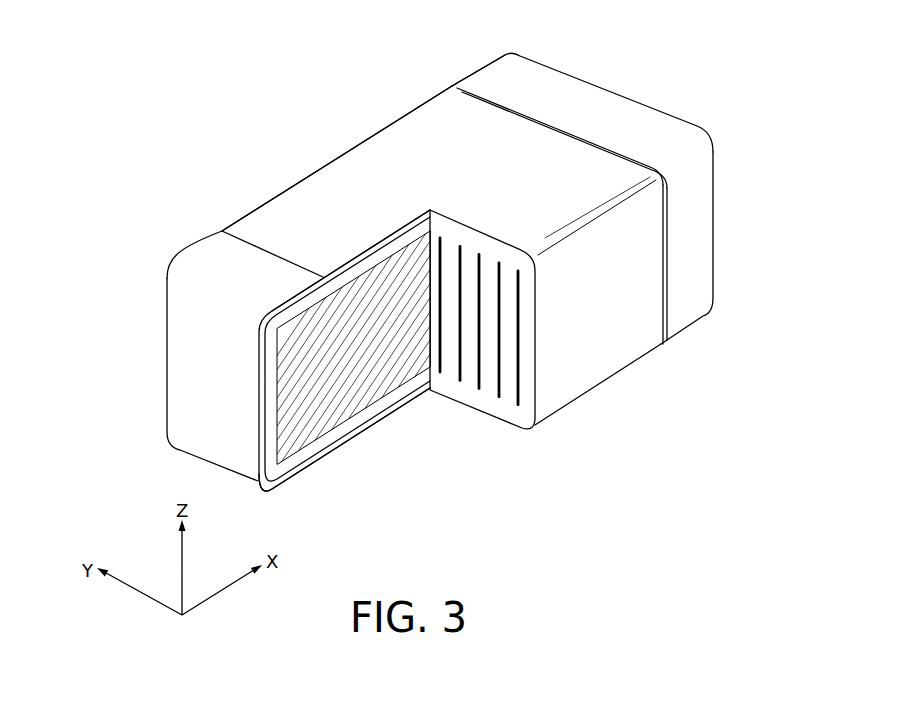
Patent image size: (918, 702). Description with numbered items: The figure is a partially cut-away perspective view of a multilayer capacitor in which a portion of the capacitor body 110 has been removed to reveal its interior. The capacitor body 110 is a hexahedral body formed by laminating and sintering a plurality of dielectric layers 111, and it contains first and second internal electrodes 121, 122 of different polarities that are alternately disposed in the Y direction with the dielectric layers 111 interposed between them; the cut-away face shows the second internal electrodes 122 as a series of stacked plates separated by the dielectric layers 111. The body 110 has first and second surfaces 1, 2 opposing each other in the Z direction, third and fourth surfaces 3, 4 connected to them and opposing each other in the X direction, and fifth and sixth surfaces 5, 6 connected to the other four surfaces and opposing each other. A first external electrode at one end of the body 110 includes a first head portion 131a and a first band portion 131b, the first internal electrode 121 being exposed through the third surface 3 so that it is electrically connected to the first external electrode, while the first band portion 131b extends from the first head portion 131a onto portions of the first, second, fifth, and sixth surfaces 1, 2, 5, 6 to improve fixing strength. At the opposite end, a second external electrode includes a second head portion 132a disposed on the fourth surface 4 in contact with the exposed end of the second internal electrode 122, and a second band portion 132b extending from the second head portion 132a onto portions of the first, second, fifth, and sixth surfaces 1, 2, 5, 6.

The first surface 1 is at (351, 435).
The second surface 2 is at (431, 149).
The third surface 3 is at (203, 421).
The fourth surface 4 is at (541, 91).
The fifth surface 5 is at (608, 347).
The sixth surface 6 is at (380, 185).
The capacitor body 110 is at (262, 175).
The dielectric layer 111 is at (483, 355).
The first internal electrode 121 is at (280, 360).
The second internal electrode 122 is at (516, 312).
The first head portion 131a is at (186, 400).
The first band portion 131b is at (197, 263).
The second head portion 132a is at (720, 210).
The second band portion 132b is at (612, 117).